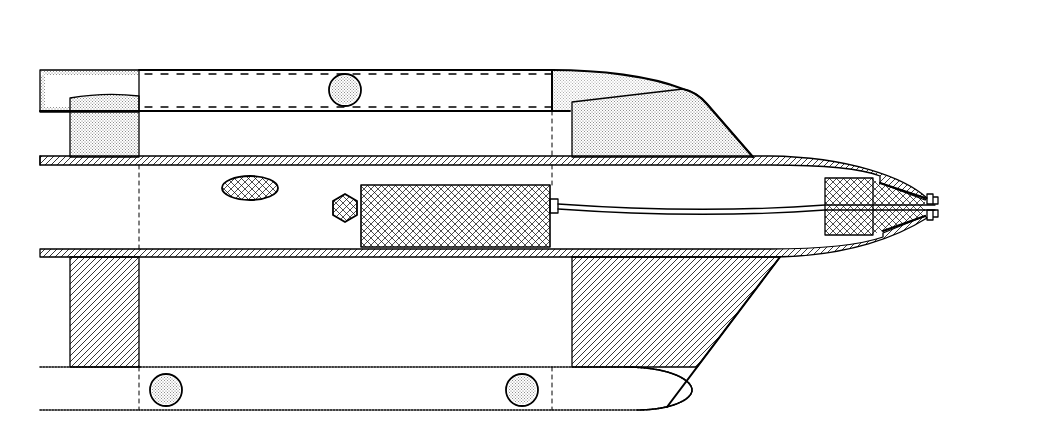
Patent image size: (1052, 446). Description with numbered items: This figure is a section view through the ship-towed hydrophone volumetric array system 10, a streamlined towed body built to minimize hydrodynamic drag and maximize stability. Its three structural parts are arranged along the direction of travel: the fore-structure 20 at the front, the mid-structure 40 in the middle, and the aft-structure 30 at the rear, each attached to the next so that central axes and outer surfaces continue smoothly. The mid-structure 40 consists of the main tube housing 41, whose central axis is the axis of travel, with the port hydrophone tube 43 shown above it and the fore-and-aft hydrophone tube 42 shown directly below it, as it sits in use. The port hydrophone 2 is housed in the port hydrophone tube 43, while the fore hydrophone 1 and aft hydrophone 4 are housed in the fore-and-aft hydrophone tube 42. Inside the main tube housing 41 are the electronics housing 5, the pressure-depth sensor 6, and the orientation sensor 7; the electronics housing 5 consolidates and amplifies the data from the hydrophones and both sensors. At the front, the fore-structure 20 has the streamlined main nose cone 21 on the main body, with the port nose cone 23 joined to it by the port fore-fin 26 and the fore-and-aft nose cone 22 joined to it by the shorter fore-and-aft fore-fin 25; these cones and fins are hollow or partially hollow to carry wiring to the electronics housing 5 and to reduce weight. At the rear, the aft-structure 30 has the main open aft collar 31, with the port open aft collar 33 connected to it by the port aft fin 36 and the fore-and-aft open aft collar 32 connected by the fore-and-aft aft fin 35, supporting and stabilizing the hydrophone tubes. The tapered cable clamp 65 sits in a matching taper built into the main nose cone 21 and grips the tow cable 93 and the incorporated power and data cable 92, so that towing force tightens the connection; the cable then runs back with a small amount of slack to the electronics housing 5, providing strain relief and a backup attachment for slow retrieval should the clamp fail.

The ship-towed hydrophone volumetric array system 10 is at (876, 43).
The fore-structure 20 is at (751, 113).
The main nose cone 21 is at (817, 157).
The fore-and-aft nose cone 22 is at (635, 410).
The port nose cone 23 is at (618, 90).
The fore-and-aft fore-fin 25 is at (483, 311).
The port fore-fin 26 is at (662, 123).
The aft-structure 30 is at (78, 66).
The main open aft collar 31 is at (45, 165).
The fore-and-aft open aft collar 32 is at (105, 410).
The port open aft collar 33 is at (89, 91).
The fore-and-aft aft fin 35 is at (104, 312).
The port aft fin 36 is at (104, 125).
The mid-structure 40 is at (382, 67).
The main tube housing 41 is at (410, 157).
The fore-and-aft hydrophone tube 42 is at (292, 410).
The port hydrophone tube 43 is at (305, 90).
The fore hydrophone 1 is at (522, 390).
The port hydrophone 2 is at (345, 90).
The aft hydrophone 4 is at (166, 390).
The electronics housing 5 is at (459, 216).
The pressure-depth sensor 6 is at (240, 197).
The orientation sensor 7 is at (333, 212).
The tapered cable clamp 65 is at (880, 238).
The power and data cable 92 is at (662, 207).
The tow cable 93 is at (705, 212).